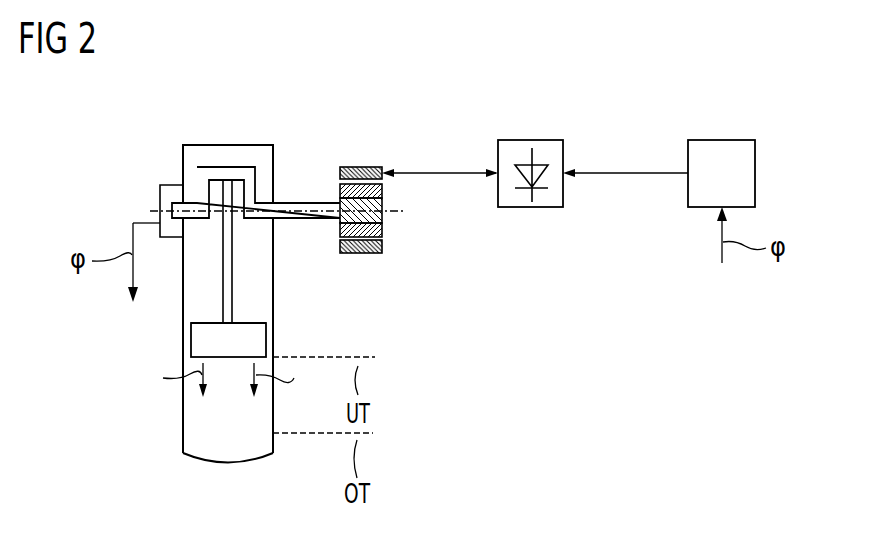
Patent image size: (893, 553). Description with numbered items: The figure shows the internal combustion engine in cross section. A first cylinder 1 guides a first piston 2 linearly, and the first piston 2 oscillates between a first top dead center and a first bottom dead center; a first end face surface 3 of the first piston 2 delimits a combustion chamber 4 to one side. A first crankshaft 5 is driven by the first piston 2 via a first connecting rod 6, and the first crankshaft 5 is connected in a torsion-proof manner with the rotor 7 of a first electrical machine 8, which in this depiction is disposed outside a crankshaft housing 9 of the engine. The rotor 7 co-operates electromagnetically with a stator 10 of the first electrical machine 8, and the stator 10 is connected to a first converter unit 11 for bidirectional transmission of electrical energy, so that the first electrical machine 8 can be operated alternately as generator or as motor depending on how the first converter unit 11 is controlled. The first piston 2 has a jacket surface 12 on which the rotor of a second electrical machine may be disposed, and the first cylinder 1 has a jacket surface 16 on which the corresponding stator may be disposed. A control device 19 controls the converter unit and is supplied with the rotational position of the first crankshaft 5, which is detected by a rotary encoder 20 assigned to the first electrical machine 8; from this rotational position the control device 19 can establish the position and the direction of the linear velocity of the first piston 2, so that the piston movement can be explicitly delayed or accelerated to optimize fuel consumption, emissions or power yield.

The first cylinder 1 is at (273, 407).
The first piston 2 is at (212, 323).
The first end face surface 3 is at (233, 360).
The combustion chamber 4 is at (231, 462).
The first crankshaft 5 is at (225, 167).
The first connecting rod 6 is at (232, 272).
The rotor 7 is at (382, 188).
The first electrical machine 8 is at (384, 209).
The crankshaft housing 9 is at (182, 164).
The stator 10 is at (360, 167).
The first converter unit 11 is at (532, 140).
The jacket surface 12 is at (266, 340).
The jacket surface 16 is at (182, 338).
The control device 19 is at (722, 140).
The rotary encoder 20 is at (160, 195).